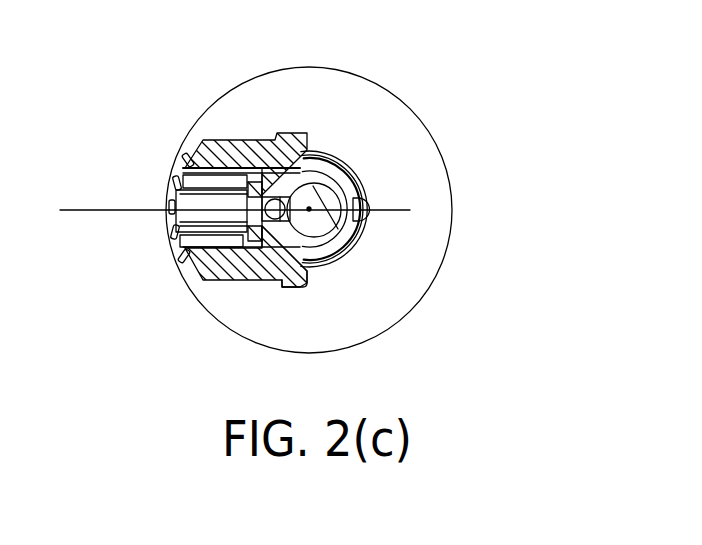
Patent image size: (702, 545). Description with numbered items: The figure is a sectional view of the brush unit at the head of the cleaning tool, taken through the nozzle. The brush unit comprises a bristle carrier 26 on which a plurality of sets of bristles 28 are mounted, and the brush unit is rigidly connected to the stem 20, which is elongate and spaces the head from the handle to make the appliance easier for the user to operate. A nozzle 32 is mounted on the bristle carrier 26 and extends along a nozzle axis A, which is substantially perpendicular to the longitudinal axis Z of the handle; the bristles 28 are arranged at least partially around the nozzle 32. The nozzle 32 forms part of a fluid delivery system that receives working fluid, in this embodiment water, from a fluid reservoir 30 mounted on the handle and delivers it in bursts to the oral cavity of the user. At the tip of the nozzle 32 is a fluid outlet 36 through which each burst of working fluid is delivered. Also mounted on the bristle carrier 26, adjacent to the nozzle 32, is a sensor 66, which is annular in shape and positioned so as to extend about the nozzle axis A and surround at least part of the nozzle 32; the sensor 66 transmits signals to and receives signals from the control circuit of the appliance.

The stem 20 is at (330, 192).
The bristle carrier 26 is at (298, 263).
The bristles 28 is at (218, 142).
The fluid reservoir 30 is at (430, 255).
The nozzle 32 is at (285, 248).
The fluid outlet 36 is at (252, 218).
The sensor 66 is at (266, 168).
The nozzle axis A is at (89, 209).
The longitudinal axis Z is at (328, 222).